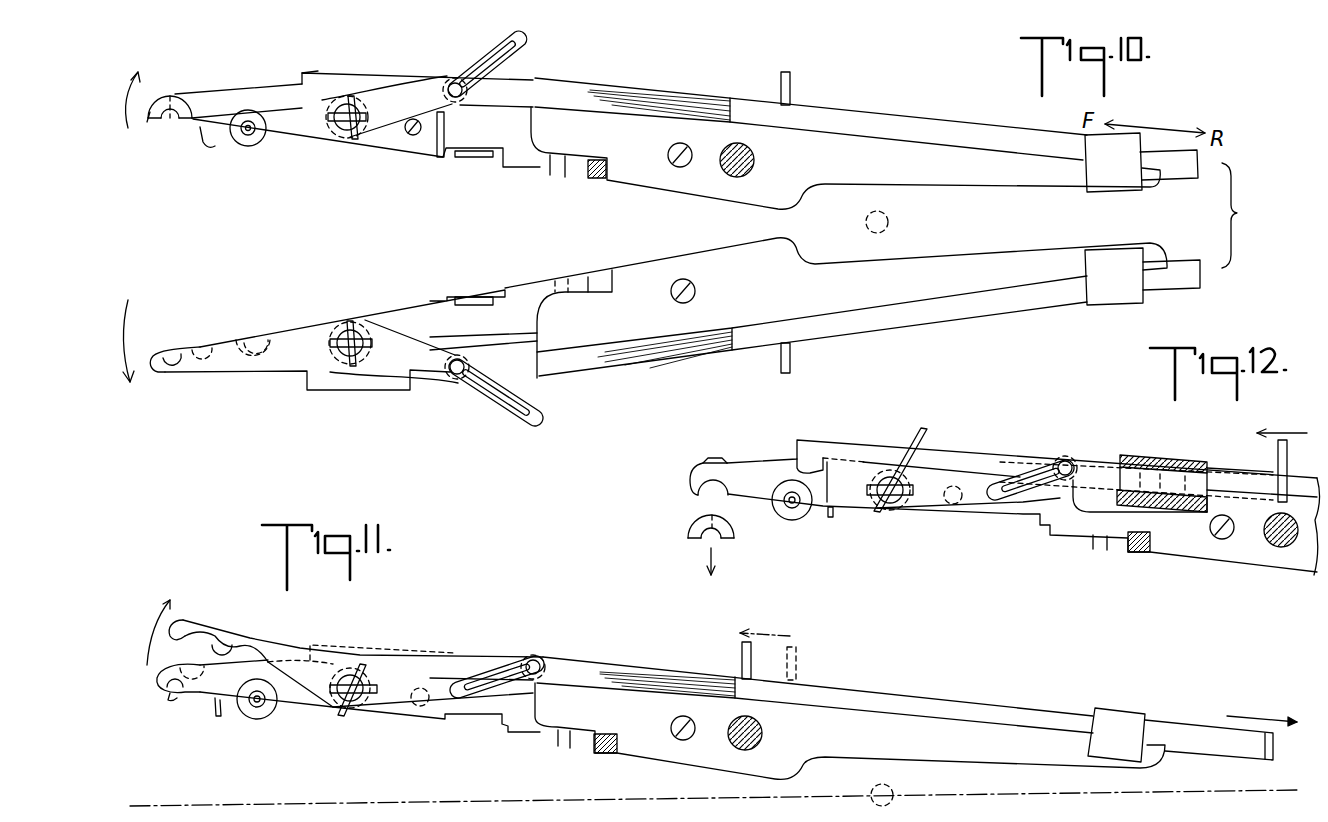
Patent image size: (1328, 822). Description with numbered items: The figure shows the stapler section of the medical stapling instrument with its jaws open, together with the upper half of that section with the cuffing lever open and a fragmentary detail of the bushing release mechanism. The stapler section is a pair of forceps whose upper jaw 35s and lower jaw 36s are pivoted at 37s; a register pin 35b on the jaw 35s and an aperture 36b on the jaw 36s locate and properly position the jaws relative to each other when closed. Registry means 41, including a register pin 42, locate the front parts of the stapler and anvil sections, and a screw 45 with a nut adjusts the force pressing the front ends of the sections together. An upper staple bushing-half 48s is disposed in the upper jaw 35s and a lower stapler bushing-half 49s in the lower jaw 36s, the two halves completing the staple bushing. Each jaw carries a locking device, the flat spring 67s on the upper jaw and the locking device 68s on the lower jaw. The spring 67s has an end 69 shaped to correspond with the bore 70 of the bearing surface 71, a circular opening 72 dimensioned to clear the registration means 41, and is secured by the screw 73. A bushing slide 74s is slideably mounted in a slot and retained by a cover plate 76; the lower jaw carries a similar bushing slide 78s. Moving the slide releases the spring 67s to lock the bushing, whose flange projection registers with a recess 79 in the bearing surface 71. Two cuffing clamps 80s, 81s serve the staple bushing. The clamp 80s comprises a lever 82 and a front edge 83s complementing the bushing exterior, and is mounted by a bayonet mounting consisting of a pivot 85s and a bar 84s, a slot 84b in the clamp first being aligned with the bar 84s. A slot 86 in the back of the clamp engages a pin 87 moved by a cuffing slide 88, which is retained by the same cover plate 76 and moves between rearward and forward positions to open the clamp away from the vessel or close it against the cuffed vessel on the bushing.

In FIG. 10, the upper jaw 35s is at (195, 125).
In FIG. 12, the upper jaw 35s is at (998, 525).
In FIG. 11, the upper jaw 35s is at (213, 702).
In FIG. 10, the register pin 35b is at (207, 148).
In FIG. 11, the register pin 35b is at (216, 716).
In FIG. 10, the lower jaw 36s is at (200, 345).
In FIG. 10, the aperture 36b is at (240, 335).
In FIG. 10, the pivot 37s is at (888, 218).
In FIG. 12, the registry means 41 is at (785, 515).
In FIG. 11, the registry means 41 is at (268, 718).
In FIG. 10, the register pin 42 is at (244, 135).
In FIG. 12, the register pin 42 is at (800, 512).
In FIG. 11, the register pin 42 is at (250, 720).
In FIG. 10, the screw 45 is at (755, 160).
In FIG. 12, the screw 45 is at (1285, 548).
In FIG. 11, the screw 45 is at (762, 733).
In FIG. 10, the upper staple bushing-half 48s is at (188, 104).
In FIG. 12, the upper staple bushing-half 48s is at (688, 535).
In FIG. 10, the lower stapler bushing-half 49s is at (182, 372).
In FIG. 10, the flat spring 67s is at (240, 88).
In FIG. 11, the flat spring 67s is at (225, 652).
In FIG. 10, the locking device 68s is at (282, 380).
In FIG. 11, the end of spring 69 is at (180, 666).
In FIG. 11, the bore 70 is at (172, 692).
In FIG. 12, the bearing surface 71 is at (690, 480).
In FIG. 11, the bearing surface 71 is at (155, 680).
In FIG. 10, the circular opening 72 is at (268, 333).
In FIG. 11, the circular opening 72 is at (248, 684).
In FIG. 10, the screw 73 is at (440, 160).
In FIG. 12, the screw 73 is at (958, 486).
In FIG. 11, the screw 73 is at (422, 688).
In FIG. 10, the bushing slide 74s is at (340, 78).
In FIG. 12, the bushing slide 74s is at (852, 446).
In FIG. 11, the bushing slide 74s is at (742, 650).
In FIG. 10, the cover plate 76 is at (606, 82).
In FIG. 11, the cover plate 76 is at (623, 657).
In FIG. 10, the bushing slide 78s is at (400, 374).
In FIG. 12, the recess 79 is at (728, 460).
In FIG. 10, the cuffing clamp 80s is at (285, 96).
In FIG. 10, the cuffing clamp 81s is at (314, 330).
In FIG. 10, the lever 82 is at (405, 88).
In FIG. 12, the lever 82 is at (922, 510).
In FIG. 11, the lever 82 is at (402, 712).
In FIG. 10, the edge 83s is at (152, 118).
In FIG. 11, the edge 83s is at (173, 618).
In FIG. 10, the bar 84s is at (347, 135).
In FIG. 12, the bar 84s is at (908, 458).
In FIG. 11, the bar 84s is at (357, 680).
In FIG. 10, the slot 84b is at (300, 135).
In FIG. 12, the slot 84b is at (874, 512).
In FIG. 11, the slot 84b is at (340, 673).
In FIG. 10, the pivot 85s is at (336, 125).
In FIG. 12, the pivot 85s is at (895, 505).
In FIG. 10, the slot 86 is at (508, 38).
In FIG. 12, the slot 86 is at (1020, 470).
In FIG. 11, the slot 86 is at (497, 665).
In FIG. 10, the pin 87 is at (457, 100).
In FIG. 12, the pin 87 is at (1068, 460).
In FIG. 11, the pin 87 is at (537, 658).
In FIG. 10, the cuffing slide 88 is at (524, 70).
In FIG. 12, the cuffing slide 88 is at (1300, 478).
In FIG. 11, the cuffing slide 88 is at (903, 695).